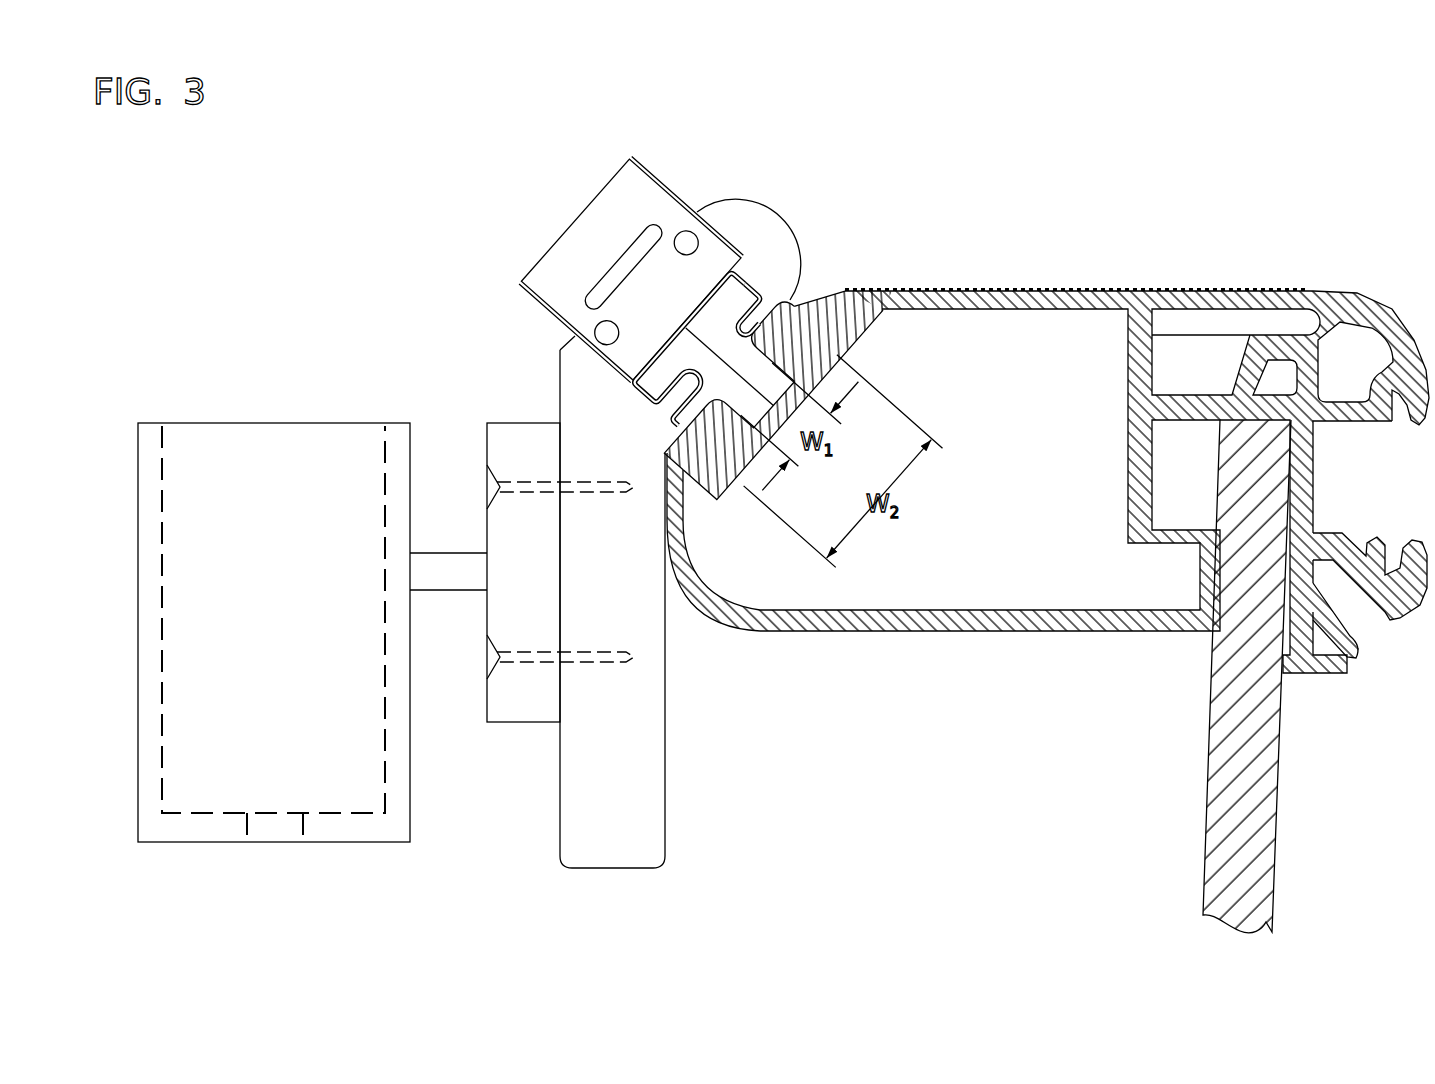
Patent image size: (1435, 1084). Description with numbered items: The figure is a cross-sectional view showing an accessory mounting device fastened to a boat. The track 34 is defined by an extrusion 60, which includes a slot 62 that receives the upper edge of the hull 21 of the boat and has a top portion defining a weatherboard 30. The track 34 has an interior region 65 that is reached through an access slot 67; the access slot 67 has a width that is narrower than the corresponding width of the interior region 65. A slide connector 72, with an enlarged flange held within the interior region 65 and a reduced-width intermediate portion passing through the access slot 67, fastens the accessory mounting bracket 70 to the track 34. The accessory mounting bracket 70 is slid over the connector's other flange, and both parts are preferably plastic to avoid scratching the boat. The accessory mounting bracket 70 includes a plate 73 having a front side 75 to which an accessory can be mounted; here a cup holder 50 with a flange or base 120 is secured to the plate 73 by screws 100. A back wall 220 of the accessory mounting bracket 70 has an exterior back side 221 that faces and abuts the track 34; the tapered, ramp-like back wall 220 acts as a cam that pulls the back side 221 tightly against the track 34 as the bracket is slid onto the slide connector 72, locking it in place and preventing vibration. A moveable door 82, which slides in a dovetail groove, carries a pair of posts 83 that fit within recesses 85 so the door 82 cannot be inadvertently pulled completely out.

The hull 21 is at (1273, 802).
The weatherboard 30 is at (1105, 288).
The track 34 is at (721, 470).
The cup holder 50 is at (263, 420).
The extrusion 60 is at (1313, 285).
The slot 62 is at (1296, 462).
The interior region 65 is at (822, 347).
The access slot 67 is at (790, 313).
The accessory mounting bracket 70 is at (627, 628).
The slide connector 72 is at (749, 268).
The plate 73 is at (610, 870).
The front side 75 is at (561, 815).
The door 82 is at (577, 220).
The posts 83 is at (686, 243).
The recesses 85 is at (707, 262).
The screws 100 is at (594, 495).
The base 120 is at (500, 432).
The back wall 220 is at (753, 323).
The back side 221 is at (700, 440).